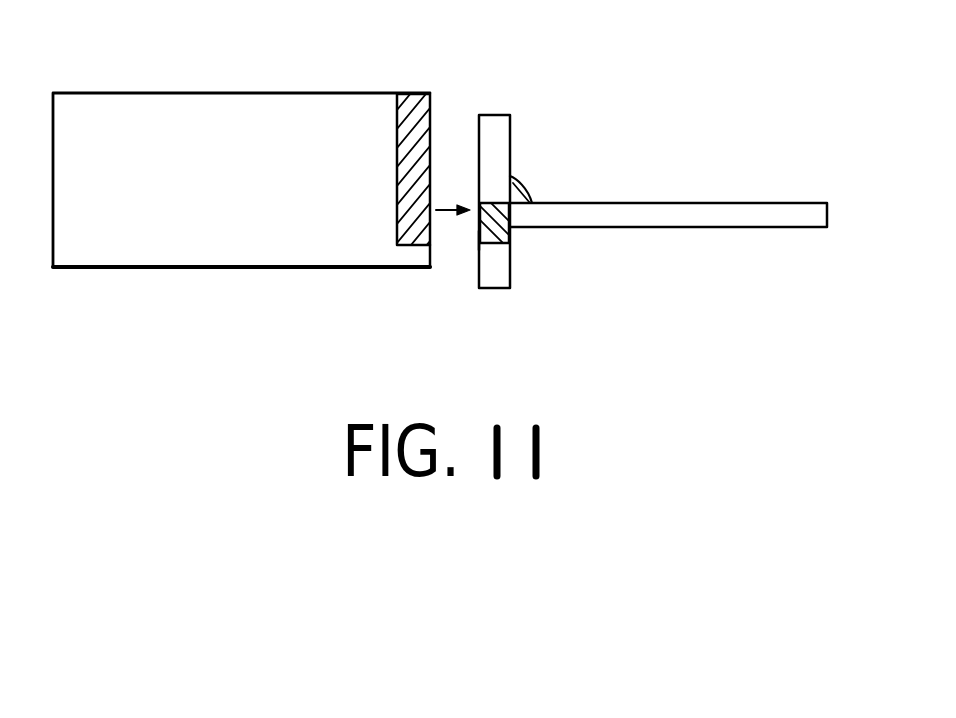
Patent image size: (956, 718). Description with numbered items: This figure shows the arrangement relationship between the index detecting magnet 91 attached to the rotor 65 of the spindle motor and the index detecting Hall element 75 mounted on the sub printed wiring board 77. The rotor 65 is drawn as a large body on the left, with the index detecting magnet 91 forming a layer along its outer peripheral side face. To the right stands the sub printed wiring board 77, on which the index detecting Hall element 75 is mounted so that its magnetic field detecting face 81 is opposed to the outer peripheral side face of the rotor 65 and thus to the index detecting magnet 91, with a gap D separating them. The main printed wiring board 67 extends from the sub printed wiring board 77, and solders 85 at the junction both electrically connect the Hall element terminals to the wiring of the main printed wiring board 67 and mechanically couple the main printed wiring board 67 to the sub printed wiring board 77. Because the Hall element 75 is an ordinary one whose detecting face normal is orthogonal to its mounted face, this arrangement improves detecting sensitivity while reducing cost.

The rotor 65 is at (252, 100).
The index detecting magnet 91 is at (411, 95).
The distance D is at (447, 210).
The sub printed wiring board 77 is at (495, 113).
The solders 85 is at (522, 182).
The index detecting Hall element 75 is at (511, 240).
The magnetic field detecting face 81 is at (478, 241).
The main printed wiring board 67 is at (792, 228).